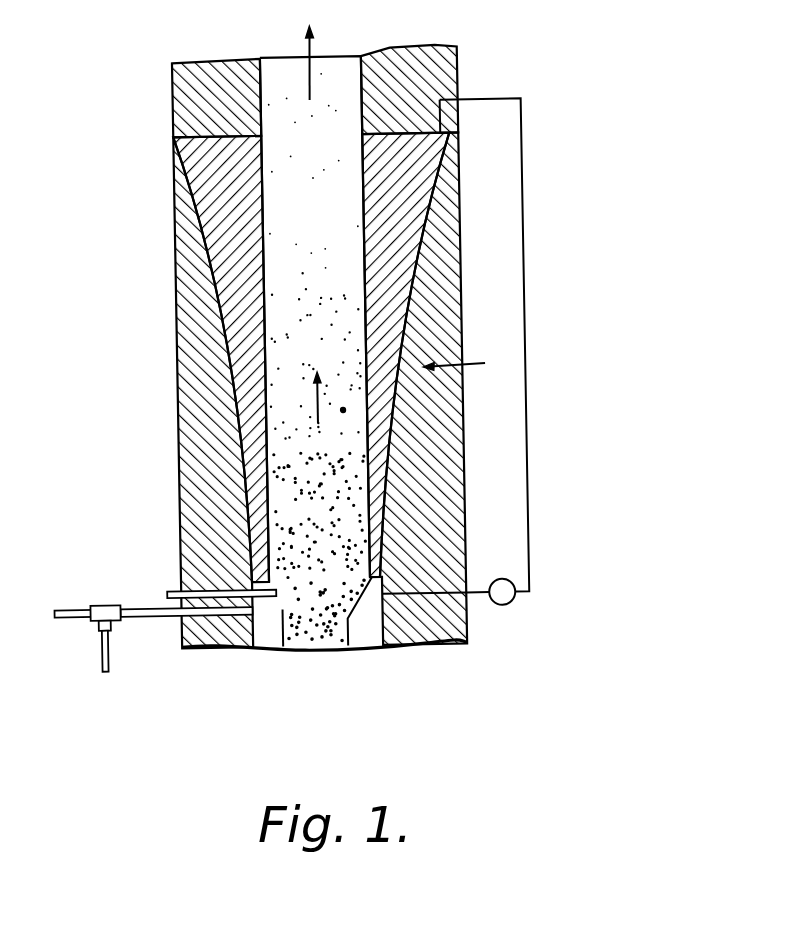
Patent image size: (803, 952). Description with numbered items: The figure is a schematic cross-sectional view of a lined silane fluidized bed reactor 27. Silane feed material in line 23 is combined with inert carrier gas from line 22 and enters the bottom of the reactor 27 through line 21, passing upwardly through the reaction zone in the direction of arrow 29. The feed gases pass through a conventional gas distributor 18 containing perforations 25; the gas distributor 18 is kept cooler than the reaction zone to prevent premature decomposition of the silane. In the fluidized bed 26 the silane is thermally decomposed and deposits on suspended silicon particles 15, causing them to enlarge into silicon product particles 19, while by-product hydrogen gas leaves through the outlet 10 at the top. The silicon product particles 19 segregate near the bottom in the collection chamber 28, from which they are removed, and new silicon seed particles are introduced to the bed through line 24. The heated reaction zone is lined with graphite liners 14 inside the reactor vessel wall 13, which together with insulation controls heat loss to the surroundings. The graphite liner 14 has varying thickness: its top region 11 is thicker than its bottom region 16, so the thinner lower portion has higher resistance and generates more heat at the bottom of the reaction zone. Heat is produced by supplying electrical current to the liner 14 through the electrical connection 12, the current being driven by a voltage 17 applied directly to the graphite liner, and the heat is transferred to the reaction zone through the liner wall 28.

The outlet 10 is at (324, 32).
The top region of the graphite liner 11 is at (396, 153).
The electrical connection 12 is at (499, 101).
The reactor vessel wall 13 is at (463, 296).
The graphite liner 14 is at (469, 362).
The silicon particles 15 is at (345, 410).
The bottom region of the graphite liner 16 is at (380, 518).
The voltage 17 is at (497, 582).
The gas distributor 18 is at (366, 618).
The silicon product particles 19 is at (302, 647).
The line 21 is at (145, 615).
The line 22 is at (92, 659).
The line 23 is at (58, 606).
The line 24 is at (163, 590).
The perforations 25 is at (272, 616).
The fluidized bed 26 is at (305, 332).
The silane fluidized bed reactor 27 is at (150, 174).
The collection chamber 28 is at (363, 274).
The arrow 29 is at (317, 423).